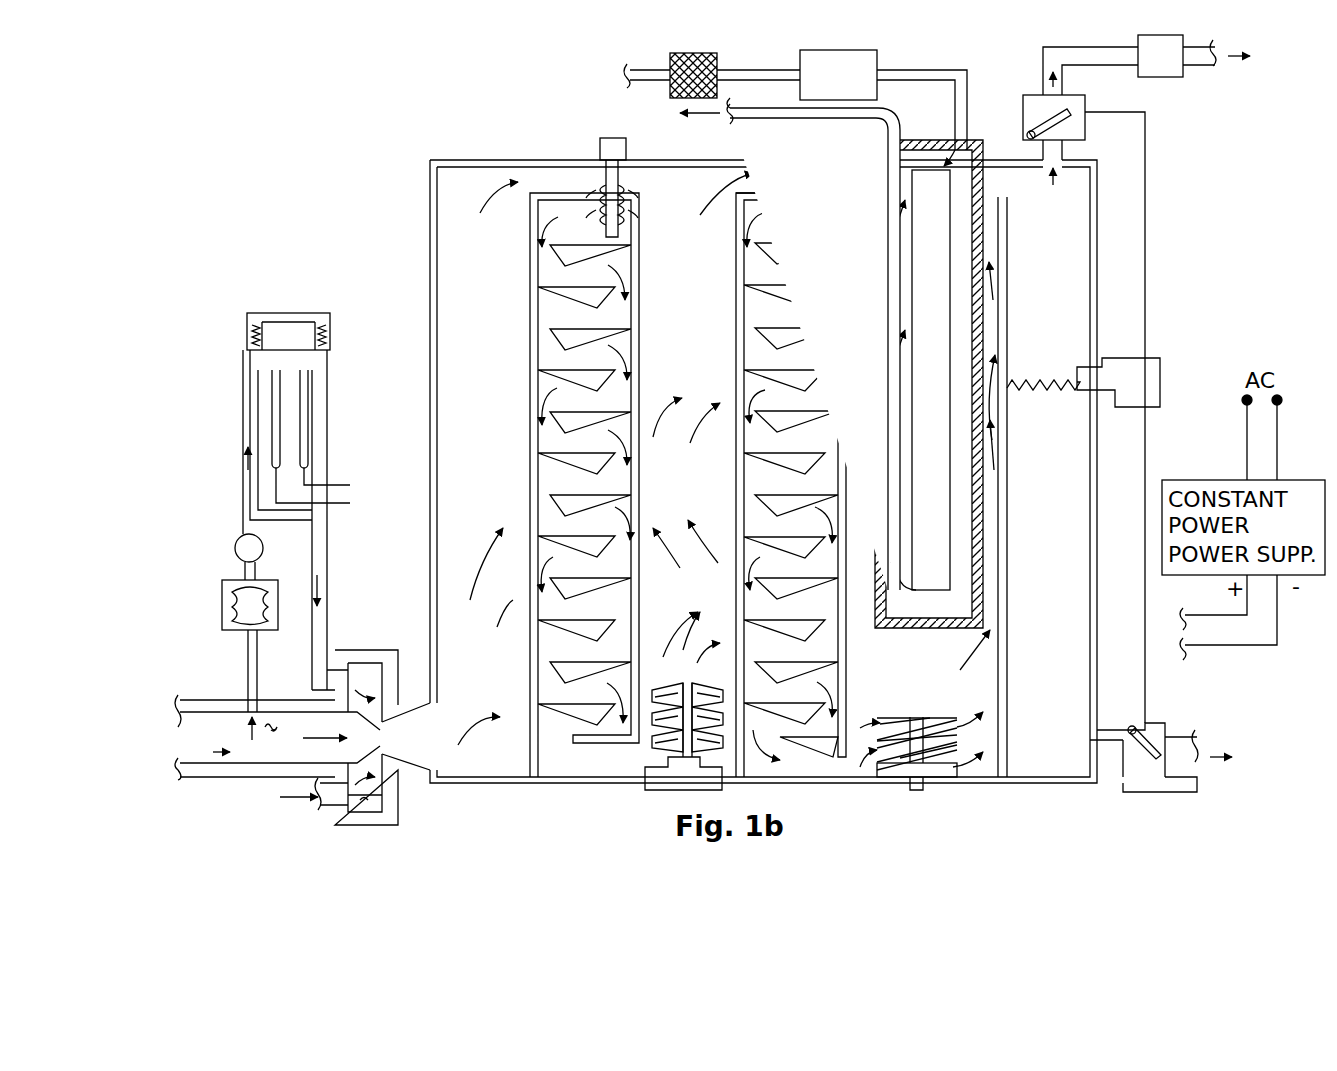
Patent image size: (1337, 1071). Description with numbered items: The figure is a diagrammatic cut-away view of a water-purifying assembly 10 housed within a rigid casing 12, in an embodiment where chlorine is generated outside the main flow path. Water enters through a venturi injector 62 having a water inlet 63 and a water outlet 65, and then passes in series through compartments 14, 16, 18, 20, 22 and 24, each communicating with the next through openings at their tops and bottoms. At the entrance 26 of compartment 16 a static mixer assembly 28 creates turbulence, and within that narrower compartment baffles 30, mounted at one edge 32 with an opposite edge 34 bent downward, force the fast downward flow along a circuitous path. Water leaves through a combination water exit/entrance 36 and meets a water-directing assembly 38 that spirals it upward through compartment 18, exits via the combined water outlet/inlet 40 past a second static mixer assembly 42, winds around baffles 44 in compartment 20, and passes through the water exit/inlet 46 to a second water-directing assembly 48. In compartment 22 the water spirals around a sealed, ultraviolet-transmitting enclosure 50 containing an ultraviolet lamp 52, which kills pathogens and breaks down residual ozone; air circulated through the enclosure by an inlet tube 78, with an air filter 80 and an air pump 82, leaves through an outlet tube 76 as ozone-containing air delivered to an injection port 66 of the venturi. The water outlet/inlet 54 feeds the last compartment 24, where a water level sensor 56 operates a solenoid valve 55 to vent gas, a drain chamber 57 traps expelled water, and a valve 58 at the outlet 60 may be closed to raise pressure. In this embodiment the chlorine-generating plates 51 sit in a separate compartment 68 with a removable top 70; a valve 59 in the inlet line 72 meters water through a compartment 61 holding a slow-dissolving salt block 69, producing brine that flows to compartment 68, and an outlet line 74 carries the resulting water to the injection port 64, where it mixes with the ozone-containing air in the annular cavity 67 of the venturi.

The assembly for purifying water 10 is at (701, 426).
The rigid casing 12 is at (487, 158).
The compartment 14 is at (491, 367).
The compartment 16 is at (582, 485).
The compartment 18 is at (703, 360).
The compartment 20 is at (763, 485).
The compartment 22 is at (995, 415).
The compartment 24 is at (1063, 420).
The entrance 26 is at (600, 183).
The static mixer assembly 28 is at (626, 195).
The baffles 30 is at (620, 330).
The edge 32 is at (577, 320).
The opposite edge 34 is at (632, 274).
The combination water exit/entrance 36 is at (628, 760).
The water-directing assembly 38 is at (660, 660).
The combined water outlet/inlet 40 is at (770, 172).
The static mixer assembly 42 is at (827, 172).
The baffles 44 is at (790, 290).
The water exit/inlet 46 is at (830, 765).
The second water-directing assembly 48 is at (937, 768).
The sealed enclosure 50 is at (968, 384).
The plates 51 is at (327, 400).
The ultraviolet light-emitting lamp 52 is at (950, 525).
The water outlet/inlet 54 is at (1020, 170).
The solenoid valve 55 is at (1072, 110).
The water level sensor 56 is at (1160, 383).
The drain chamber 57 is at (1165, 77).
The valve 58 is at (1160, 722).
The valve 59 is at (240, 540).
The outlet 60 is at (1130, 755).
The compartment 61 is at (262, 580).
The venturi injector 62 is at (335, 716).
The water inlet 63 is at (272, 725).
The injection port 64 is at (340, 650).
The water outlet 65 is at (448, 723).
The injection port 66 is at (335, 802).
The annular cavity 67 is at (370, 805).
The compartment 68 is at (335, 512).
The slow-dissolving block 69 is at (222, 600).
The removable top 70 is at (285, 313).
The inlet line 72 is at (245, 682).
The outlet line 74 is at (327, 577).
The outlet tube 76 is at (876, 112).
The inlet tube 78 is at (965, 80).
The air filter 80 is at (690, 53).
The air pump 82 is at (830, 50).